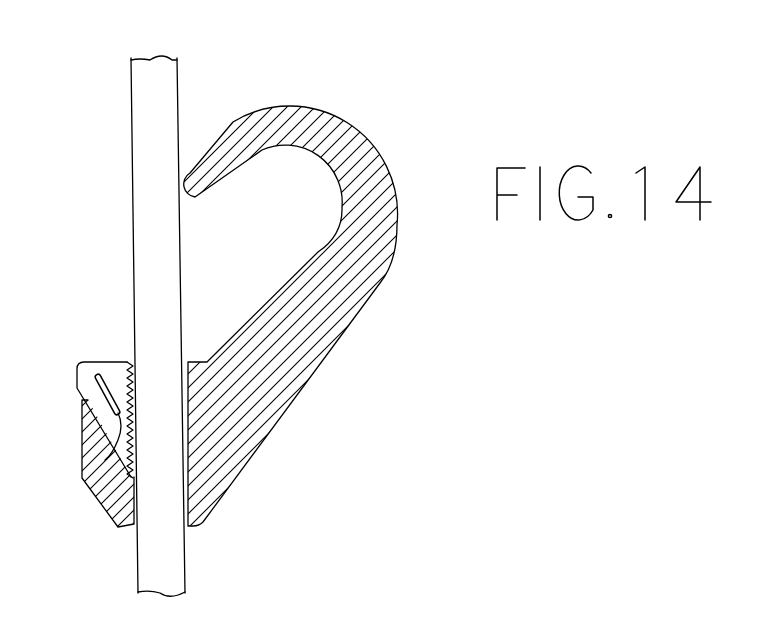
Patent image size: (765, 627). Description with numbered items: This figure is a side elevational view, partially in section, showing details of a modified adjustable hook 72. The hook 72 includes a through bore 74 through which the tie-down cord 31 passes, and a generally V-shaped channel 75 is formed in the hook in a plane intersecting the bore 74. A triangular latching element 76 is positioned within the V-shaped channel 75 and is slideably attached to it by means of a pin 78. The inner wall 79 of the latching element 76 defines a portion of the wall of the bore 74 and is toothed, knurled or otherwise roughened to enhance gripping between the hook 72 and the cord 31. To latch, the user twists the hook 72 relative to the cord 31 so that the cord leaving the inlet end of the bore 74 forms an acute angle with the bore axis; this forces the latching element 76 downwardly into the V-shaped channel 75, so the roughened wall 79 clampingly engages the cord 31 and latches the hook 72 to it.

The tie-down cord 31 is at (150, 213).
The adjustable hook 72 is at (412, 68).
The through bore 74 is at (184, 407).
The V-shaped channel 75 is at (95, 402).
The triangular latching element 76 is at (113, 365).
The pin 78 is at (105, 460).
The inner wall 79 is at (133, 444).